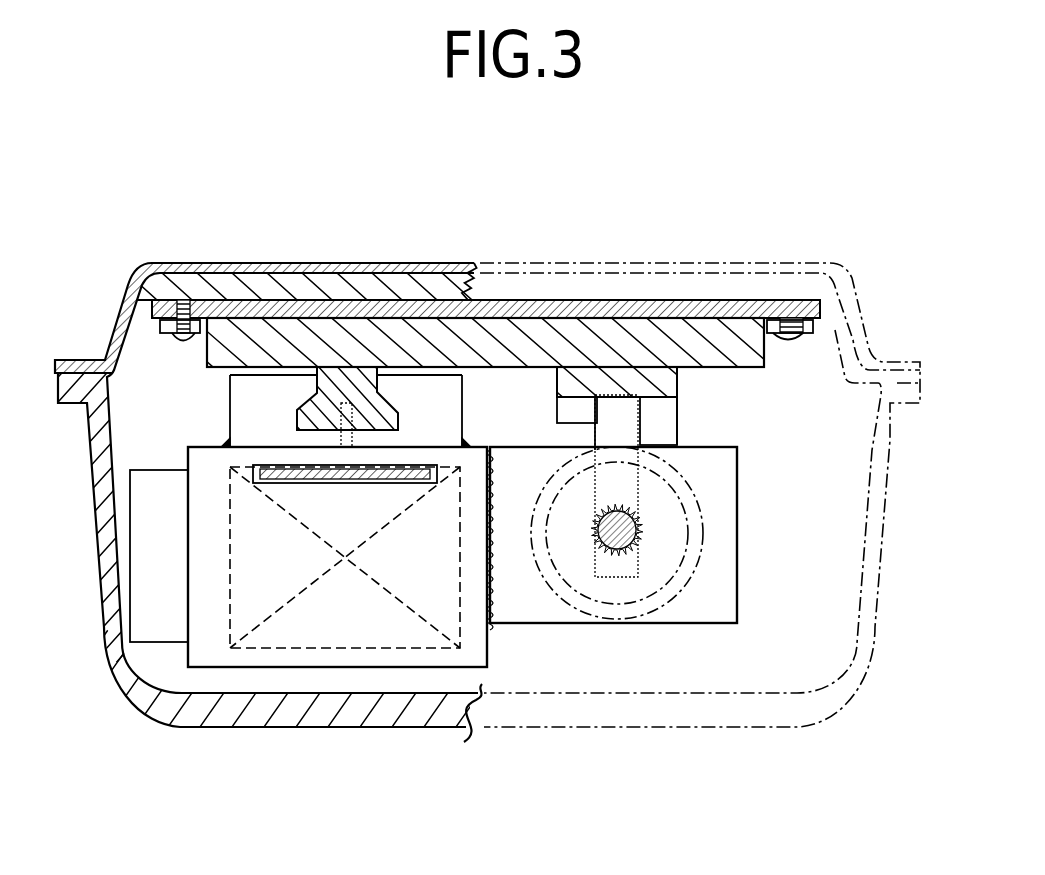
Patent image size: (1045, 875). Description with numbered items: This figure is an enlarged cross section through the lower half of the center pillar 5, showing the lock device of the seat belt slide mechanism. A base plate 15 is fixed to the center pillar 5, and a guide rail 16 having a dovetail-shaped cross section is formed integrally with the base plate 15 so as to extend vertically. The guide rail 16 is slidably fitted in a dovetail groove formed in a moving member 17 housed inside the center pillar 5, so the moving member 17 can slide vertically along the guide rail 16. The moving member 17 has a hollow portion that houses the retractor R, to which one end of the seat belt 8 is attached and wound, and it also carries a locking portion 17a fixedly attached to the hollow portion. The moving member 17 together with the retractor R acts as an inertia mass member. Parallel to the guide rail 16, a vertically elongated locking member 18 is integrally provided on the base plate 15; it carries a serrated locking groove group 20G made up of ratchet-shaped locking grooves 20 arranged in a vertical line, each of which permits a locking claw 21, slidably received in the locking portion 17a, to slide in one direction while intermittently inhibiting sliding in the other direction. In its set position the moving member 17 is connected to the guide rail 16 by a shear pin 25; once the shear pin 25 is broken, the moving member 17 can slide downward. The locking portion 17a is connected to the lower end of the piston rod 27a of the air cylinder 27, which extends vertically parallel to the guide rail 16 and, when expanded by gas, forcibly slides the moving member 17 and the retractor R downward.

The center pillar 5 is at (248, 713).
The base plate 15 is at (680, 308).
The guide rail 16 is at (297, 410).
The shear pin 25 is at (350, 440).
The seat belt 8 is at (320, 483).
The locking member 18 is at (573, 383).
The locking member (claw) 21 is at (597, 428).
The locking groove 20 is at (667, 410).
The serrated locking groove group 20G is at (677, 393).
The piston rod 27a is at (640, 510).
The locking portion 17a is at (730, 543).
The air cylinder 27 is at (660, 613).
The moving member 17 is at (488, 650).
The retractor R is at (370, 633).